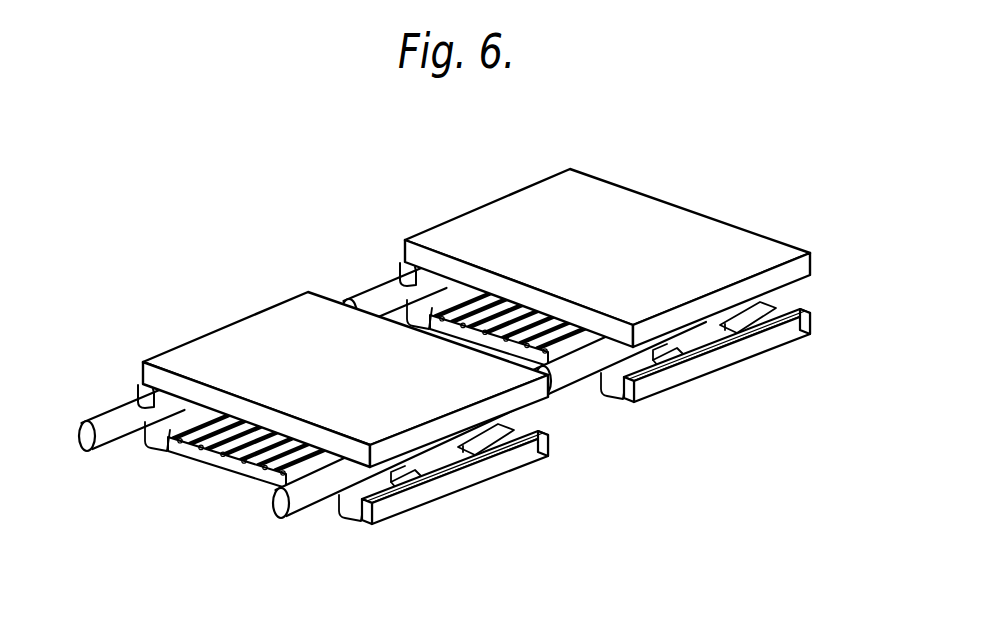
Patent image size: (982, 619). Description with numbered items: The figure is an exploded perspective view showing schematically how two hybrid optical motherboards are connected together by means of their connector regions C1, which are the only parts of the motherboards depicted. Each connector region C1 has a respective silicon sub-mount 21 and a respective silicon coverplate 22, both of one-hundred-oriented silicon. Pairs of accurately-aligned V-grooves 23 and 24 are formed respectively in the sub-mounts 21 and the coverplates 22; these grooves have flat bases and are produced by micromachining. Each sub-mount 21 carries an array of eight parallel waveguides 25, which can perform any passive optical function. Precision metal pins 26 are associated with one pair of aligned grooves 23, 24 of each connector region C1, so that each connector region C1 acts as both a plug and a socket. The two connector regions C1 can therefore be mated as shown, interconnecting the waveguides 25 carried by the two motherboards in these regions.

The connector region C1 is at (450, 354).
The silicon sub-mount 21 is at (720, 363).
The silicon coverplate 22 is at (661, 209).
The V-groove 23 is at (418, 305).
The V-groove 24 is at (140, 387).
The waveguide 25 is at (237, 447).
The precision metal pin 26 is at (366, 300).